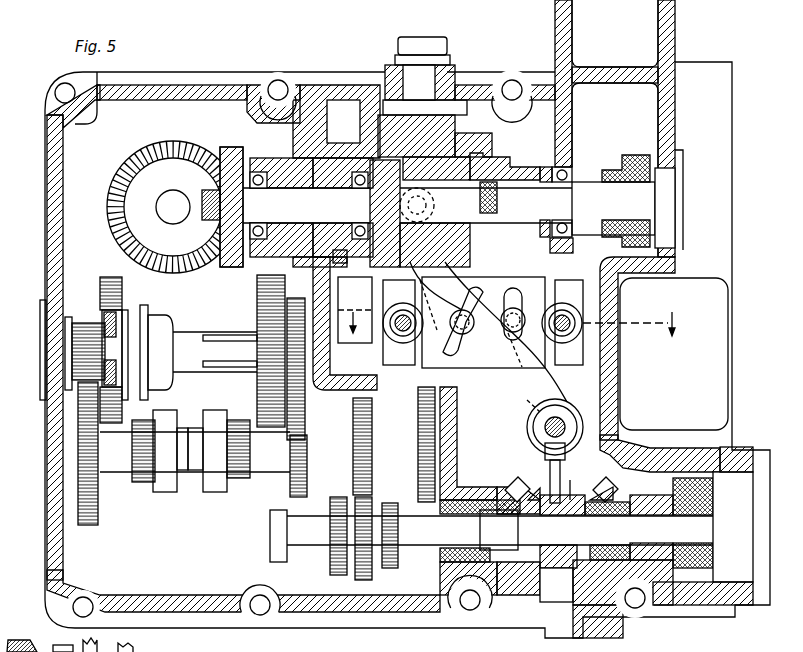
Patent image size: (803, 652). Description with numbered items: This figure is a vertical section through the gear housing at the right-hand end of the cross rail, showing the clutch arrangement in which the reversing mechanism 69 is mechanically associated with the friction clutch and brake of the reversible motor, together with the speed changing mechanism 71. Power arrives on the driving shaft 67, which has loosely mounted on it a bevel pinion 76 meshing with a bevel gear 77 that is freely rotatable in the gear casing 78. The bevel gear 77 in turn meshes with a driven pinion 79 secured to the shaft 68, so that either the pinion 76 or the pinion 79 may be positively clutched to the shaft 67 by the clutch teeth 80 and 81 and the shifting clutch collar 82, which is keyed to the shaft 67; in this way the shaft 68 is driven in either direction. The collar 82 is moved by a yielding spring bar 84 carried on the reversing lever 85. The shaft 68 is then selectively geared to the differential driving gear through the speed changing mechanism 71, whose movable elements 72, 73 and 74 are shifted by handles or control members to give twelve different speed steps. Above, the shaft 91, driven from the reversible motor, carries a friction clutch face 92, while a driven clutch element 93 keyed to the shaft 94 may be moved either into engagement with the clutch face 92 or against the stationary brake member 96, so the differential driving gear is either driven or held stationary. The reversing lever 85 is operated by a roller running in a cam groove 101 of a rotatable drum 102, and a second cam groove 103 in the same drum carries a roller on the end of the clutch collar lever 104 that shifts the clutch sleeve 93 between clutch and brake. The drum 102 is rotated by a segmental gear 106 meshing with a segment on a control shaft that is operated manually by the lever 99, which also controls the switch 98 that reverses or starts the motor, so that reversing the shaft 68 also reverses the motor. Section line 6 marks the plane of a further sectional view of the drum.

The section line 6 is at (511, 325).
The driving shaft 67 is at (596, 530).
The shaft 68 is at (376, 536).
The reversing mechanism 69 is at (556, 585).
The speed changing mechanism 71 is at (225, 307).
The movable element 72 is at (152, 325).
The movable element 73 is at (258, 394).
The movable element 74 is at (328, 572).
The bevel pinion 76 is at (612, 488).
The bevel gear 77 is at (488, 622).
The gear casing 78 is at (415, 625).
The driven pinion 79 is at (506, 484).
The clutch teeth 80 is at (533, 500).
The clutch teeth 81 is at (578, 502).
The shifting clutch collar 82 is at (570, 482).
The yielding spring bar 84 is at (548, 465).
The reversing lever 85 is at (530, 400).
The shaft 91 is at (623, 201).
The friction clutch face 92 is at (506, 168).
The driven clutch element 93 is at (484, 150).
The shaft 94 is at (417, 213).
The stationary brake member 96 is at (343, 121).
The switch 98 is at (674, 354).
The manually controlled element 99 is at (76, 642).
The cam groove 101 is at (518, 303).
The rotatable drum 102 is at (464, 368).
The second cam groove 103 is at (463, 344).
The clutch collar lever 104 is at (443, 292).
The segmental gear 106 is at (355, 310).